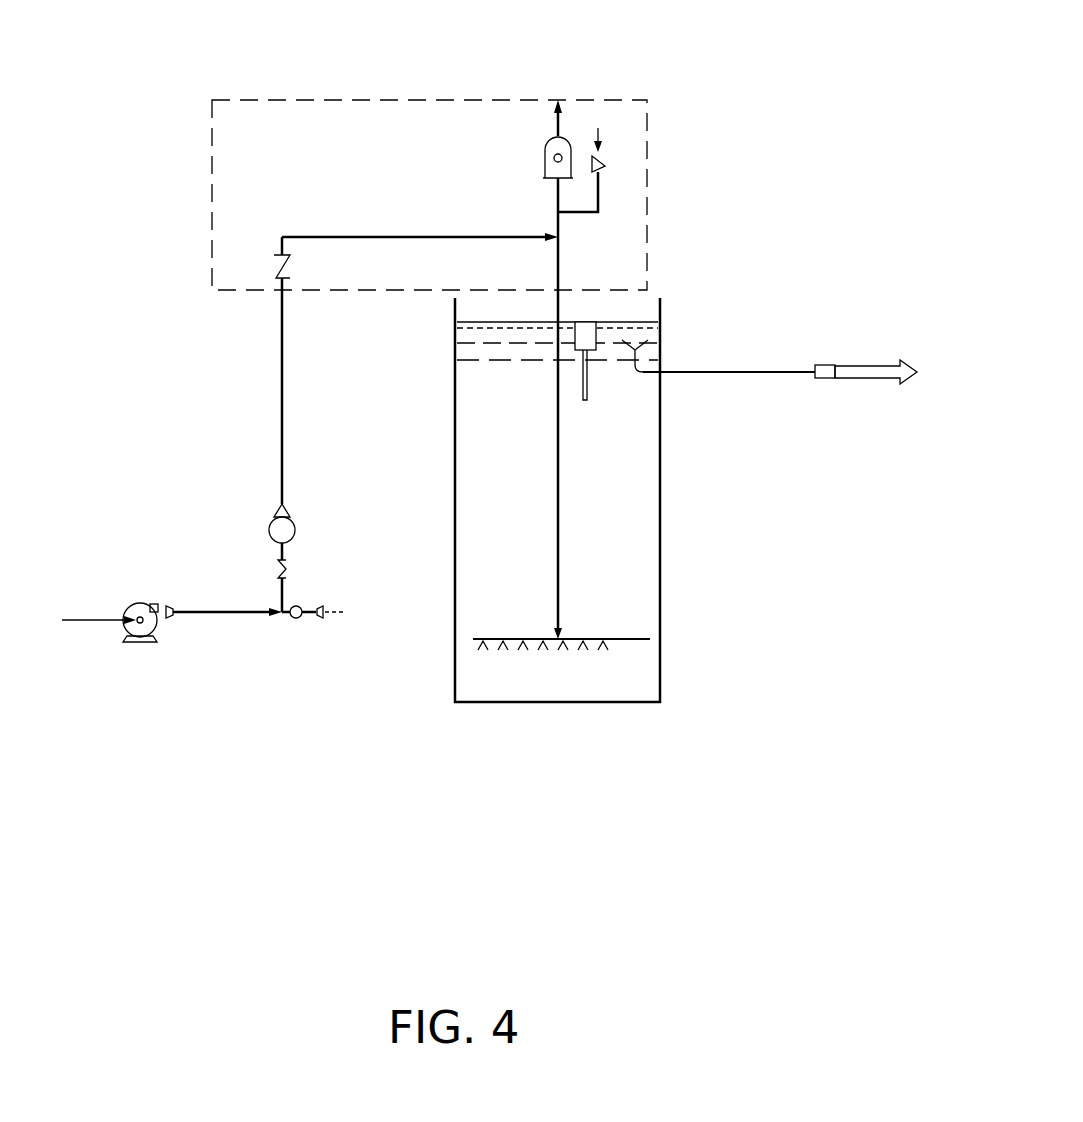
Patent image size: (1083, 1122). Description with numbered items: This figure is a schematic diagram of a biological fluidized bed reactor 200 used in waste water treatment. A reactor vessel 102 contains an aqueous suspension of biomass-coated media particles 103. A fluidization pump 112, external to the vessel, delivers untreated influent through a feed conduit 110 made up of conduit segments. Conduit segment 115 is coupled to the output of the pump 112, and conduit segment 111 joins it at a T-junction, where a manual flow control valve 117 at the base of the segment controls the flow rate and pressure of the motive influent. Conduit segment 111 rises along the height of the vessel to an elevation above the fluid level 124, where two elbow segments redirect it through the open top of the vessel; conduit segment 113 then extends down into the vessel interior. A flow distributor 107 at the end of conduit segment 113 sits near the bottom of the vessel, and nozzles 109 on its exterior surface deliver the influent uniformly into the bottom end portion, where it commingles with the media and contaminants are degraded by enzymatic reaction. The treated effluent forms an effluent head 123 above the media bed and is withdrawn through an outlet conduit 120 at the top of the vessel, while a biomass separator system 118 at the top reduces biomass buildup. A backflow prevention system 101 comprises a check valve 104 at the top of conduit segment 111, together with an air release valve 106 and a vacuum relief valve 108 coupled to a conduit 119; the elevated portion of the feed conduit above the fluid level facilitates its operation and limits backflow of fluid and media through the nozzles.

The fluidized bed reactor 200 is at (406, 76).
The backflow prevention system 101 is at (249, 100).
The reactor vessel 102 is at (640, 532).
The media particles 103 is at (465, 452).
The check valve 104 is at (274, 262).
The air release valve 106 is at (545, 160).
The flow distributor 107 is at (625, 641).
The vacuum relief valve 108 is at (606, 166).
The nozzles 109 is at (545, 652).
The feed conduit 110 is at (283, 402).
The conduit segment 111 is at (360, 237).
The fluidization pump 112 is at (152, 632).
The conduit segment 113 is at (557, 507).
The conduit segment 115 is at (227, 614).
The manual flow control valve 117 is at (280, 570).
The biomass separator system 118 is at (596, 345).
The conduit 119 is at (558, 208).
The outlet conduit 120 is at (757, 373).
The effluent head 123 is at (445, 320).
The fluid level 124 is at (638, 328).